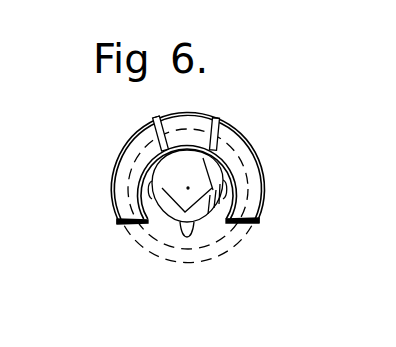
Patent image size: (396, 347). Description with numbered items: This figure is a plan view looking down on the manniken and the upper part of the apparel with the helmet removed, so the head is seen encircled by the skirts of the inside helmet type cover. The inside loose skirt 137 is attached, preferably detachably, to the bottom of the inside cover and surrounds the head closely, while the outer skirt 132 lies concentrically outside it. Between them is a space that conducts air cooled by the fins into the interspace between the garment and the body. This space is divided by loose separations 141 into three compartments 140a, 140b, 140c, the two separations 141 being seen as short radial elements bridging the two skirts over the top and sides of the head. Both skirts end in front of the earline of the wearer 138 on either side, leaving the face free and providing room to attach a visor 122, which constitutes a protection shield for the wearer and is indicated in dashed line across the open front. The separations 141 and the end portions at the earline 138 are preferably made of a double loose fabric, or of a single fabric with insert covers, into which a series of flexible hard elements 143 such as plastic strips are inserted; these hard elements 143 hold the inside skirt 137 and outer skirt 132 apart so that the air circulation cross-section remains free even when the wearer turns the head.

The visor 122 is at (205, 263).
The outer skirt 132 is at (257, 199).
The inside loose skirt 137 is at (228, 211).
The earline of the wearer 138 is at (134, 224).
The first compartment 140a is at (127, 188).
The second compartment 140b is at (201, 129).
The third compartment 140c is at (253, 176).
The loose separations 141 is at (150, 124).
The flexible hard elements 143 is at (160, 118).